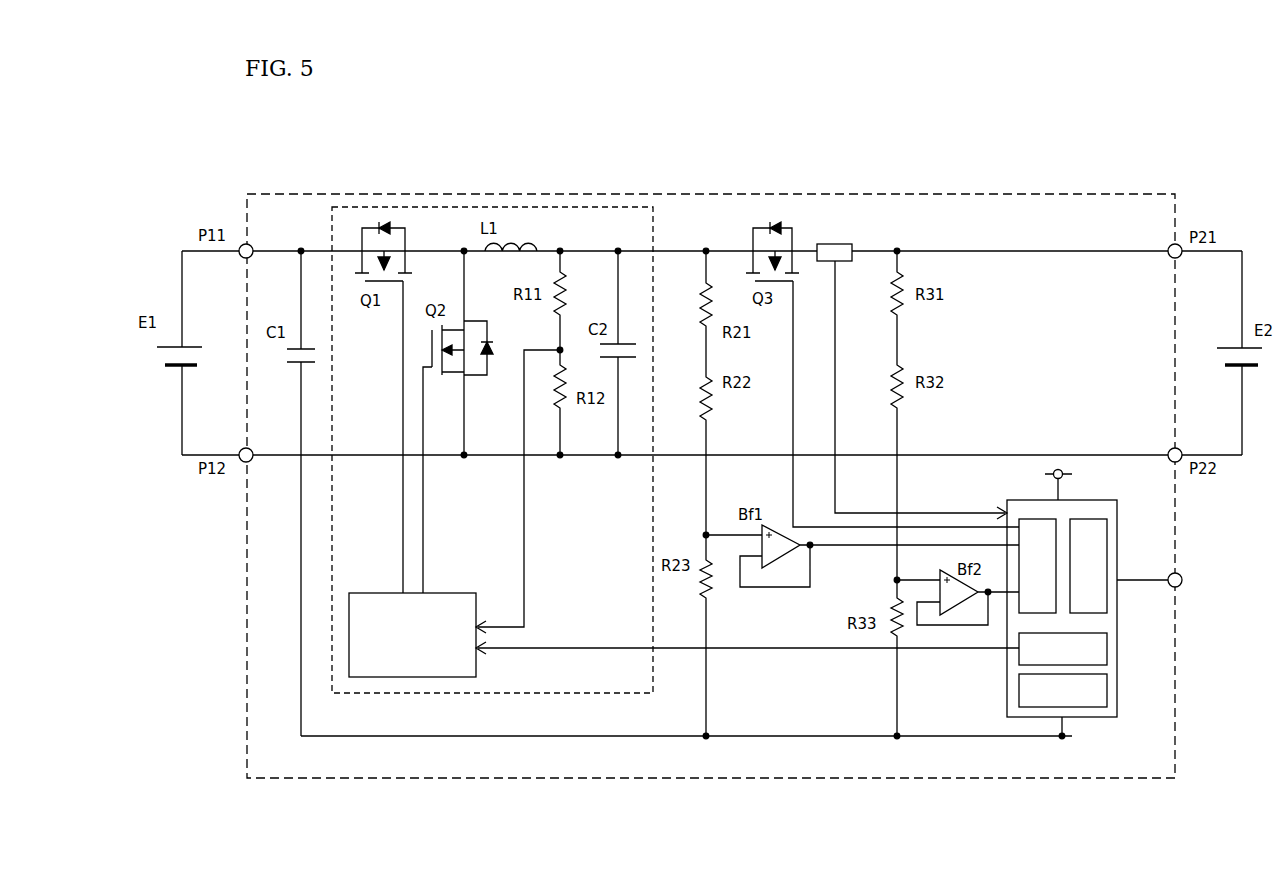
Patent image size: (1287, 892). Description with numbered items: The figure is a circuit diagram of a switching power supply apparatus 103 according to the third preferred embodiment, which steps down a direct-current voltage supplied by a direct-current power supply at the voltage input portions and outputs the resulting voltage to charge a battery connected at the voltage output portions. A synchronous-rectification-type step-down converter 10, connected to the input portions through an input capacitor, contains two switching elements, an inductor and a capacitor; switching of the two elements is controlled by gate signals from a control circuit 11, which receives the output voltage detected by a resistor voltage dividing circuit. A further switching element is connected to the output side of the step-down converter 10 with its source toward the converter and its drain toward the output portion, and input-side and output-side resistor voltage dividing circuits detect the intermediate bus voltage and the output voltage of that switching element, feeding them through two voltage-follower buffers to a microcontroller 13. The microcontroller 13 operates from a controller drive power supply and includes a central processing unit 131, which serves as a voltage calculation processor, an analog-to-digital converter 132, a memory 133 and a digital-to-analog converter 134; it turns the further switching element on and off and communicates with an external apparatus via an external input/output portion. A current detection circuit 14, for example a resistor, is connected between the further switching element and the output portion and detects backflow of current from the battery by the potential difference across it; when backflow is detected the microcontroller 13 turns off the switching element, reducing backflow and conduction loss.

The switching power supply apparatus 103 is at (263, 193).
The step-down converter 10 is at (336, 198).
The control circuit 11 is at (373, 592).
The microcontroller 13 is at (1102, 601).
The central processing unit 131 is at (1107, 684).
The analog-to-digital converter 132 is at (1026, 519).
The memory 133 is at (1107, 566).
The digital-to-analog converter 134 is at (1107, 641).
The current detection circuit 14 is at (852, 244).